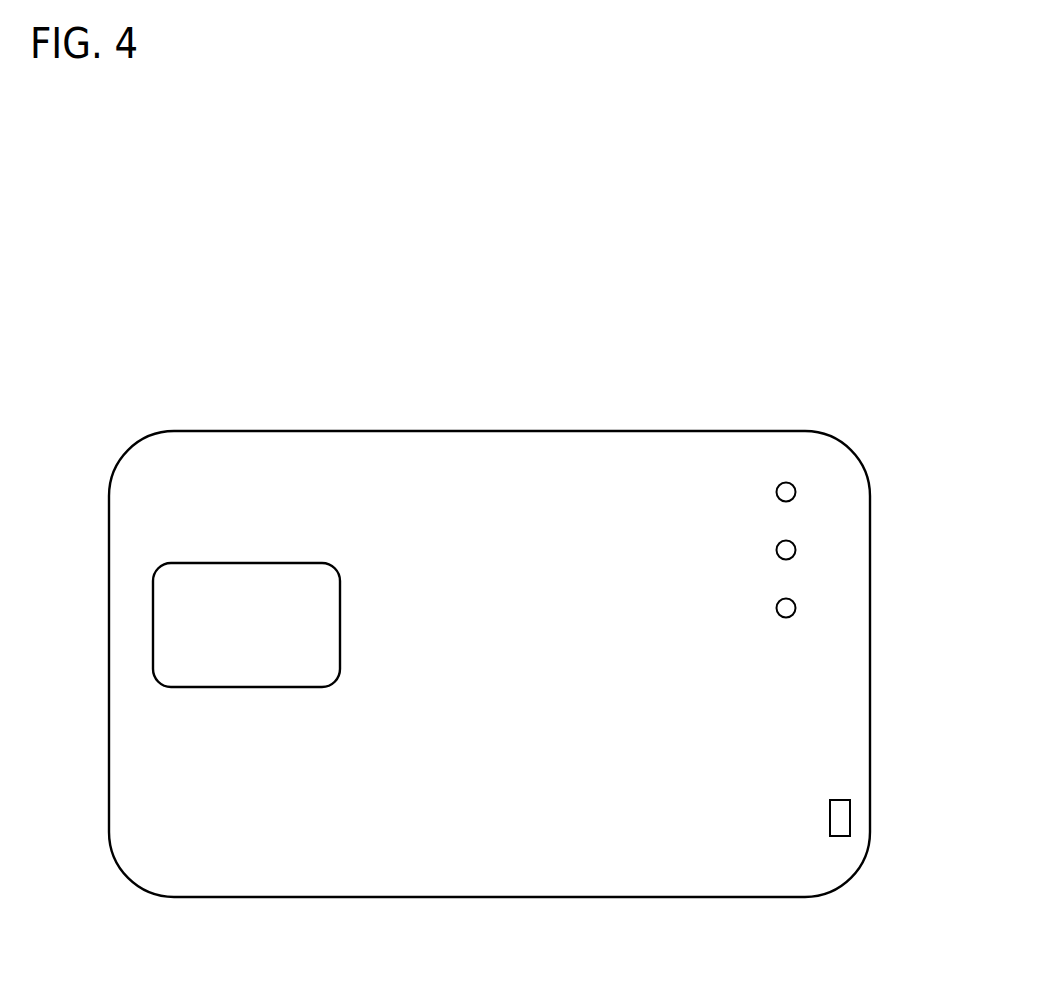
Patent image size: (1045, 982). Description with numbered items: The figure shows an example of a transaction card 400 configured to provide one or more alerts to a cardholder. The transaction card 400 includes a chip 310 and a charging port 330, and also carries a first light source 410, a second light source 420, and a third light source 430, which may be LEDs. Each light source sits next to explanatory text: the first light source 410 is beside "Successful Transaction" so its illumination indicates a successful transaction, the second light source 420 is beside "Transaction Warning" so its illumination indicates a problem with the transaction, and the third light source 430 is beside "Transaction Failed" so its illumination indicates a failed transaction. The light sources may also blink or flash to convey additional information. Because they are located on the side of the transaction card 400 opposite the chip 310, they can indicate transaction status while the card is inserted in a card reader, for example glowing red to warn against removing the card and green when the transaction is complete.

The transaction card 400 is at (235, 431).
The chip 310 is at (246, 625).
The first light source 410 is at (796, 492).
The second light source 420 is at (796, 550).
The third light source 430 is at (796, 608).
The charging port 330 is at (850, 818).